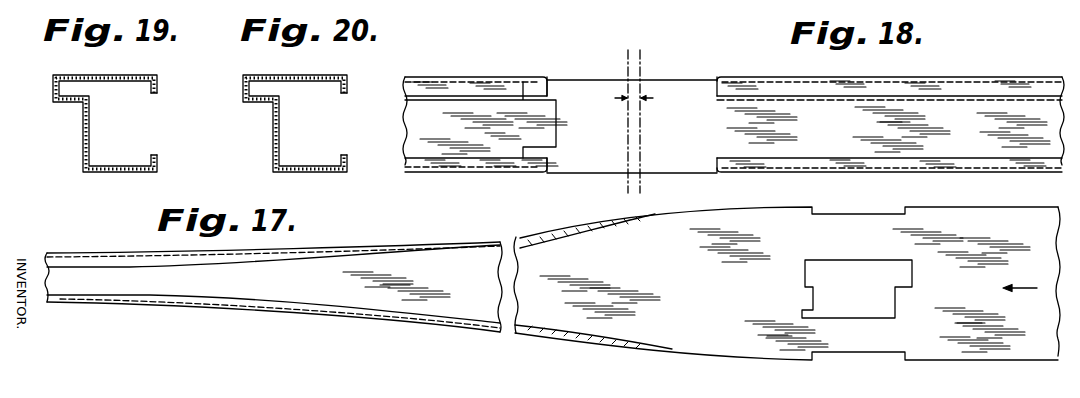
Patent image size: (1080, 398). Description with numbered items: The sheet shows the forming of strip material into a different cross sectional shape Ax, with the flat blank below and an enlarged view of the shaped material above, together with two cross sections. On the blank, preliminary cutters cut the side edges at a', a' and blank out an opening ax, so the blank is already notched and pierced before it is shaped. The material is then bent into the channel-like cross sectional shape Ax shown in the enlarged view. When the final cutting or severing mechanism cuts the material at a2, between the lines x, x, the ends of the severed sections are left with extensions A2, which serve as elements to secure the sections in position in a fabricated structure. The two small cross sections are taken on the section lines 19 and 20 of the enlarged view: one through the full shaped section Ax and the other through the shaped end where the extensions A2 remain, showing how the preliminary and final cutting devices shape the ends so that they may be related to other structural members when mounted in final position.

In FIG. 19, the cross sectional shape Ax is at (83, 123).
In FIG. 18, the cross sectional shape Ax is at (966, 84).
In FIG. 17, the cross sectional shape Ax is at (130, 300).
In FIG. 20, the extensions A2 is at (313, 82).
In FIG. 18, the extensions A2 is at (597, 79).
In FIG. 18, the cut a2 is at (639, 68).
In FIG. 18, the lines x is at (628, 189).
In FIG. 17, the cuts a' is at (787, 282).
In FIG. 17, the opening ax is at (877, 260).
In FIG. 18, the section line 19 is at (450, 188).
In FIG. 18, the section line 20 is at (680, 192).